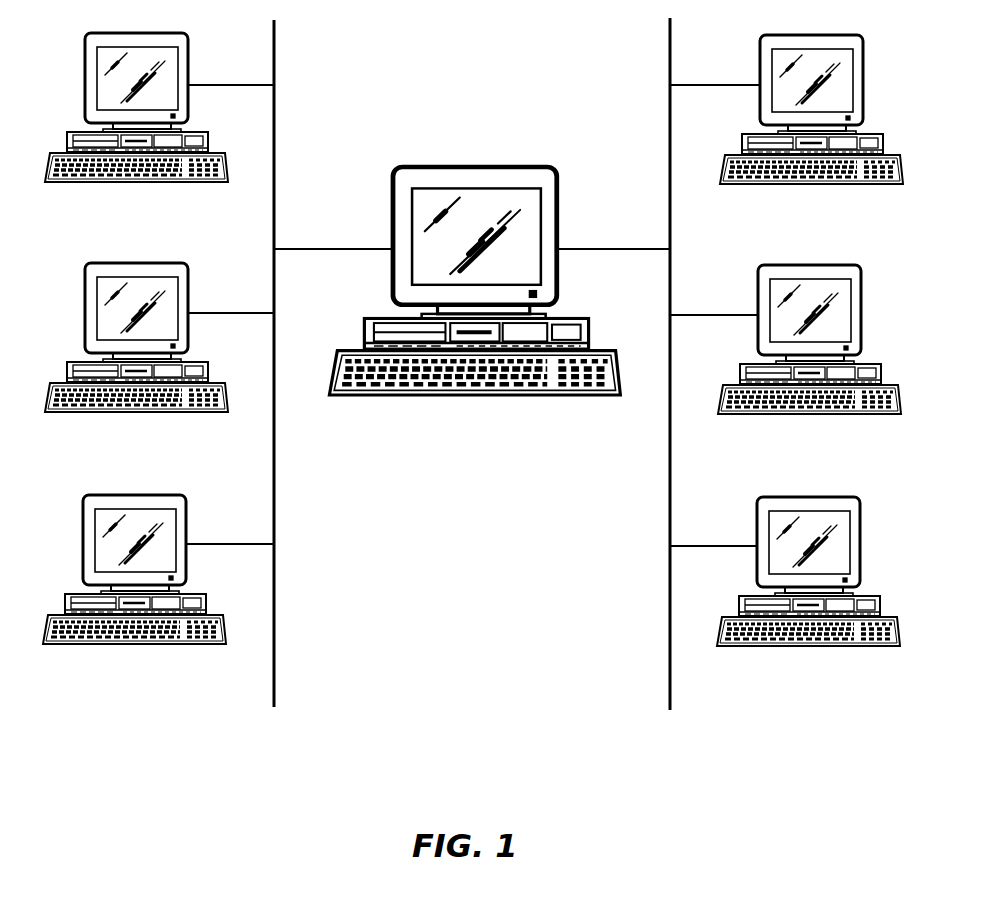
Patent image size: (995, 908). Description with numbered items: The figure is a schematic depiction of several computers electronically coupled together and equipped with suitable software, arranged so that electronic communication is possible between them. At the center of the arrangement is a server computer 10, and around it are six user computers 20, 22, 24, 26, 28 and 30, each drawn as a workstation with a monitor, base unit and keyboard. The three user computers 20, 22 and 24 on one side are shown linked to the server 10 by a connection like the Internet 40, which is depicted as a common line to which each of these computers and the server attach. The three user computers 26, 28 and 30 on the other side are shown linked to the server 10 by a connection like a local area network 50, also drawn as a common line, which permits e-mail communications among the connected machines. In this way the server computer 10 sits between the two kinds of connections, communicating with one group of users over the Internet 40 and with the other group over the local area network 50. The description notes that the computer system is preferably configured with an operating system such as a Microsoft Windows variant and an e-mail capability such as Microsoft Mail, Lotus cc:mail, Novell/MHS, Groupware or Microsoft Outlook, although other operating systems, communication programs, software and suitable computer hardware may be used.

The server computer 10 is at (522, 167).
The user computer 20 is at (158, 33).
The user computer 22 is at (158, 263).
The user computer 24 is at (156, 495).
The user computer 26 is at (838, 35).
The user computer 28 is at (836, 265).
The user computer 30 is at (835, 497).
The Internet 40 is at (276, 683).
The local area network 50 is at (668, 690).